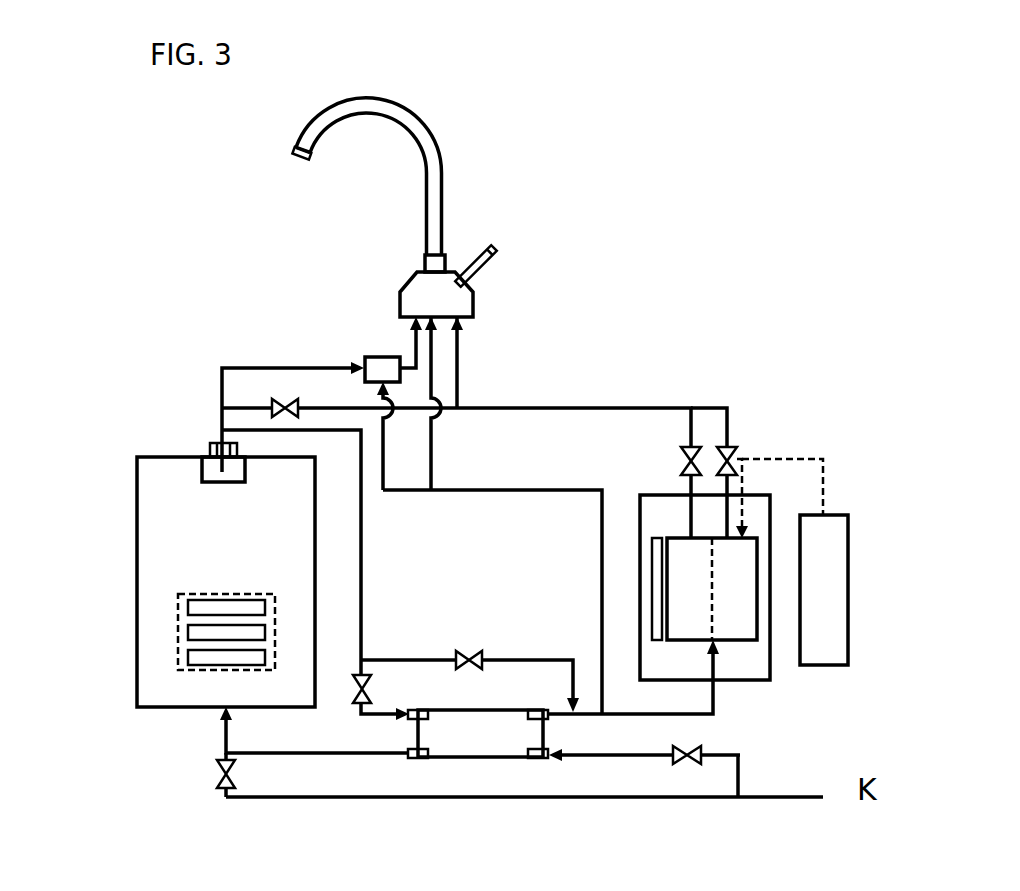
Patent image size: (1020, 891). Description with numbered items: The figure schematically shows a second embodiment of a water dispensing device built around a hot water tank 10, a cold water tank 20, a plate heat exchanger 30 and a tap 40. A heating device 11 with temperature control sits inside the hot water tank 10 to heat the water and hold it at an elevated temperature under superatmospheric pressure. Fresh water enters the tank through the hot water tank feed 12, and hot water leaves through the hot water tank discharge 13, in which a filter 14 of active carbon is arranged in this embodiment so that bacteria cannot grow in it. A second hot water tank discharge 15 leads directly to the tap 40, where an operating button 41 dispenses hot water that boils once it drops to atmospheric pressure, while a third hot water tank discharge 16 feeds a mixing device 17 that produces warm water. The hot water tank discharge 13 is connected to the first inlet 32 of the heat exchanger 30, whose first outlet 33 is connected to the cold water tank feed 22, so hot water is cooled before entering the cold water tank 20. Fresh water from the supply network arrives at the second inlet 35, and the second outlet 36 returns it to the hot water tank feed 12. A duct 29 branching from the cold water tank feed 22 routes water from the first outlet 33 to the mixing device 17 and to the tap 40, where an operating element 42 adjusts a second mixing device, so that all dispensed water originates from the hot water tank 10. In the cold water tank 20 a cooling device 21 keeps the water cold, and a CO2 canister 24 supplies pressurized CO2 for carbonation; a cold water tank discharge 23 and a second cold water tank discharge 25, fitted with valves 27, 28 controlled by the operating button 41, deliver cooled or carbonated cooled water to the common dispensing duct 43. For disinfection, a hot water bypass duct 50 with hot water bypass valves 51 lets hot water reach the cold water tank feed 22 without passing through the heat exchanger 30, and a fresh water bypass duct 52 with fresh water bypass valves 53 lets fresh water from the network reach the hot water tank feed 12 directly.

The hot water tank 10 is at (128, 555).
The heating device 11 is at (200, 633).
The hot water tank feed 12 is at (224, 733).
The hot water tank discharge 13 is at (223, 430).
The filter 14 is at (210, 452).
The second hot water tank discharge 15 is at (252, 408).
The third hot water tank discharge 16 is at (220, 385).
The mixing device 17 is at (387, 368).
The cold water tank 20 is at (780, 517).
The cooling device 21 is at (657, 590).
The cold water tank feed 22 is at (713, 688).
The cold water tank discharge 23 is at (690, 425).
The CO2 canister 24 is at (820, 550).
The second cold water tank discharge 25 is at (730, 427).
The valve 27 is at (698, 450).
The valve 28 is at (737, 458).
The duct 29 is at (573, 490).
The heat exchanger 30 is at (492, 745).
The first inlet 32 is at (410, 714).
The first outlet 33 is at (548, 715).
The second inlet 35 is at (552, 758).
The second outlet 36 is at (413, 755).
The tap 40 is at (443, 192).
The operating button 41 is at (432, 263).
The operating element 42 is at (493, 265).
The dispensing duct 43 is at (457, 350).
The hot water bypass duct 50 is at (528, 658).
The hot water bypass valves 51 is at (363, 677).
The fresh water bypass duct 52 is at (223, 792).
The fresh water bypass valves 53 is at (220, 765).